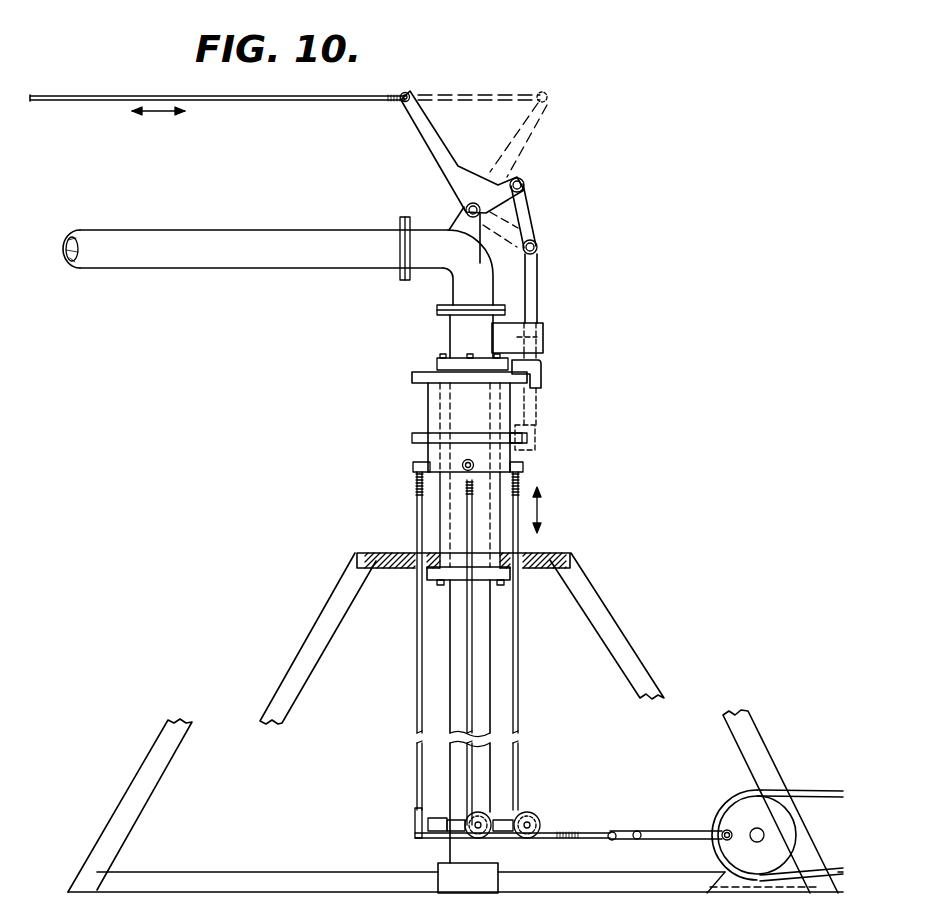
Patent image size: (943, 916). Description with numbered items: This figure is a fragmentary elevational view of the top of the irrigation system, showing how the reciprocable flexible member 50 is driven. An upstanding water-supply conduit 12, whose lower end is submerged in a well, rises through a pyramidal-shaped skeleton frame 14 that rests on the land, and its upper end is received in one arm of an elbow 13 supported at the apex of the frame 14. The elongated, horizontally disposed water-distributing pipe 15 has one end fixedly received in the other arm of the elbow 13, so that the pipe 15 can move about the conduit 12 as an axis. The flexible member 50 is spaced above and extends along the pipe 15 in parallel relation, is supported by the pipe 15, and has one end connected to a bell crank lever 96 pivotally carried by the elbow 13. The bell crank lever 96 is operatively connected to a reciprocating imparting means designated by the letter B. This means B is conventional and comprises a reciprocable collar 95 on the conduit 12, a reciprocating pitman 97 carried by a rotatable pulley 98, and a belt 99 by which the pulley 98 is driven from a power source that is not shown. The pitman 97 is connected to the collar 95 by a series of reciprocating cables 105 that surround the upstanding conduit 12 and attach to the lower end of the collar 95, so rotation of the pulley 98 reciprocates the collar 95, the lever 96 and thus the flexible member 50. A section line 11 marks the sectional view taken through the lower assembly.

The reciprocable flexible member 50 is at (340, 102).
The bell crank lever 96 is at (447, 153).
The elbow 13 is at (486, 300).
The water-distributing pipe 15 is at (314, 268).
The reciprocable collar 95 is at (437, 415).
The pyramidal-shaped skeleton frame 14 is at (308, 643).
The reciprocating cables 105 is at (417, 645).
The water-supply conduit 12 is at (458, 668).
The reciprocating imparting means B is at (523, 727).
The section line 11- 11 is at (605, 765).
The reciprocating pitman 97 is at (695, 810).
The rotatable pulley 98 is at (745, 802).
The cable 99 is at (812, 795).